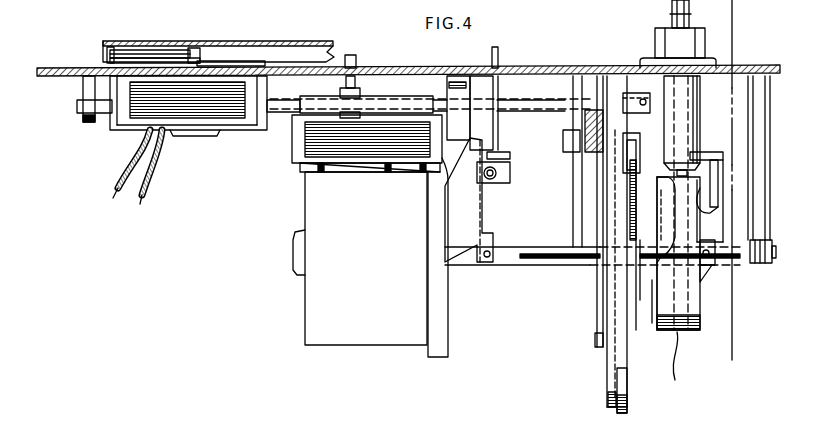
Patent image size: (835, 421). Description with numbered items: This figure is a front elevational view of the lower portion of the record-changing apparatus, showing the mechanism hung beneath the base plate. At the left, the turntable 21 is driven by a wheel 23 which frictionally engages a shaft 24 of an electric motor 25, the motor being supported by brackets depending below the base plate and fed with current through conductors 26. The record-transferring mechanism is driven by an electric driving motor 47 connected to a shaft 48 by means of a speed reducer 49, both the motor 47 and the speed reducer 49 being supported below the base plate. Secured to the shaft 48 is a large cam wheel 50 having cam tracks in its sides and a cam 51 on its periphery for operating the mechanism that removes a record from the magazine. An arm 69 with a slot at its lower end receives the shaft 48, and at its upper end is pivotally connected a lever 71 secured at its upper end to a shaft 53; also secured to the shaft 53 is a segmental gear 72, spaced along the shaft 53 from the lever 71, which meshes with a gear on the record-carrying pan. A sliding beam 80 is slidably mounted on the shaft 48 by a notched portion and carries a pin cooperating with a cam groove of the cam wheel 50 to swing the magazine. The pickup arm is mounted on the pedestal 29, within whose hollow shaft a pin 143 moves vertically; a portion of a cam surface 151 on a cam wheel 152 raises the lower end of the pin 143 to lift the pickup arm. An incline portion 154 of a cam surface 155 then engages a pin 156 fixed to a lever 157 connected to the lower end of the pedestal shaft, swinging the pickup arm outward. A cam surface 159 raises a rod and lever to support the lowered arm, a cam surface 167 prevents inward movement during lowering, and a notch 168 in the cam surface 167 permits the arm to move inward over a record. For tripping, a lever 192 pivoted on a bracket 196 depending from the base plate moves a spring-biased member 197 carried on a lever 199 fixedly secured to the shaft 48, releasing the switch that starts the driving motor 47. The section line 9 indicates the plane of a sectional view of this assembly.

The section line 9- 9 is at (714, 10).
The turntable 21 is at (275, 42).
The wheel 23 is at (128, 50).
The shaft 24 is at (196, 48).
The electric motor 25 is at (246, 128).
The conductors 26 is at (131, 185).
The pedestal 29 is at (702, 42).
The electric driving motor 47 is at (297, 160).
The shaft 48 is at (558, 266).
The speed reducer 49 is at (310, 290).
The large cam wheel 50 is at (609, 360).
The cam 51 is at (626, 407).
The shaft 53 is at (548, 100).
The arm 69 is at (631, 181).
The lever 71 is at (628, 140).
The segmental gear 72 is at (358, 58).
The sliding beam 80 is at (598, 150).
The pin 143 is at (700, 150).
The cam surface 151 is at (688, 332).
The cam wheel 152 is at (683, 366).
The incline portion 154 is at (718, 211).
The cam surface 155 is at (725, 228).
The pin 156 is at (720, 168).
The lever 157 is at (723, 154).
The cam surface 159 is at (652, 323).
The cam surface 167 is at (658, 293).
The notch 168 is at (667, 213).
The lever 192 is at (500, 56).
The bracket 196 is at (443, 322).
The spring-biased member 197 is at (508, 162).
The lever 199 is at (485, 207).